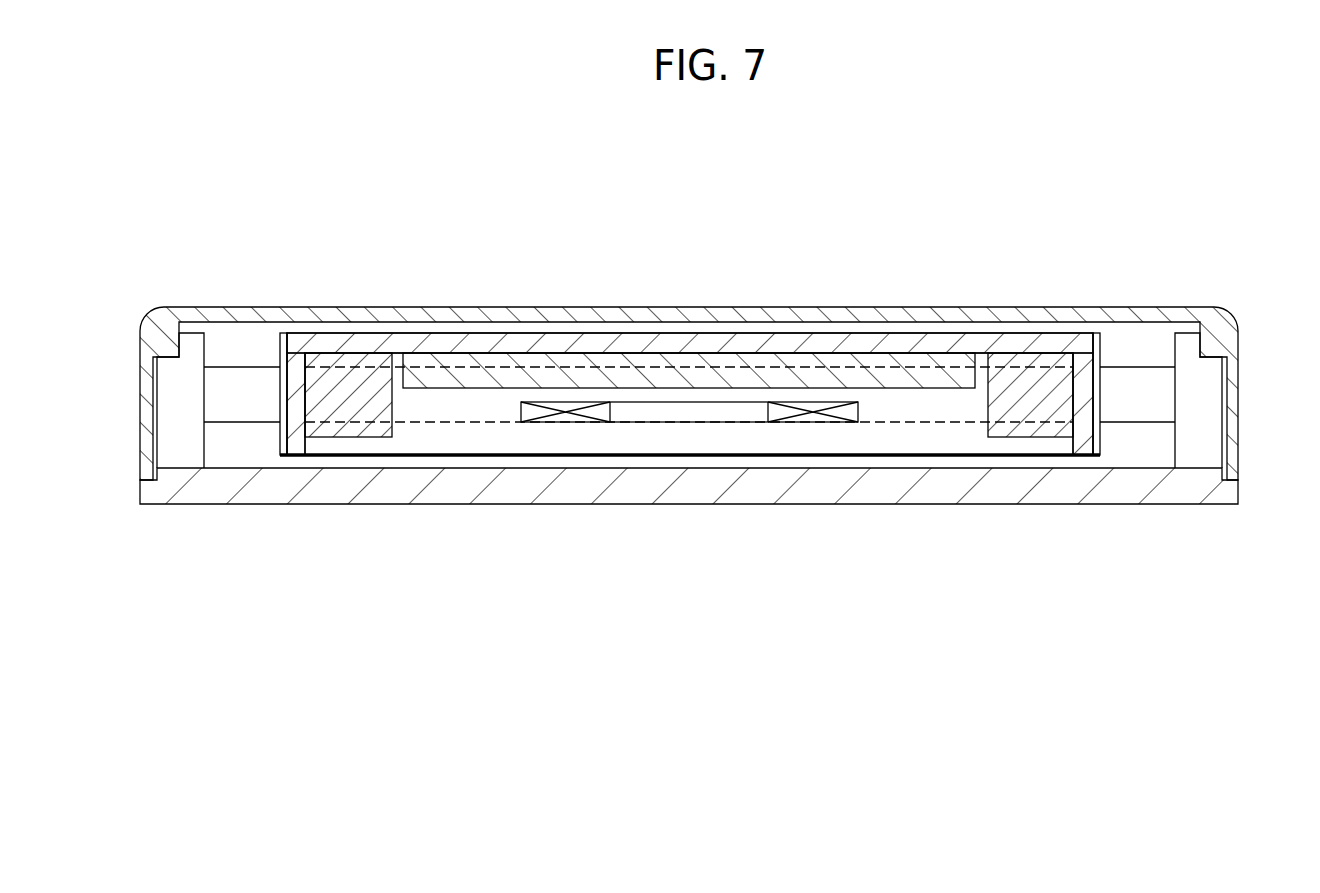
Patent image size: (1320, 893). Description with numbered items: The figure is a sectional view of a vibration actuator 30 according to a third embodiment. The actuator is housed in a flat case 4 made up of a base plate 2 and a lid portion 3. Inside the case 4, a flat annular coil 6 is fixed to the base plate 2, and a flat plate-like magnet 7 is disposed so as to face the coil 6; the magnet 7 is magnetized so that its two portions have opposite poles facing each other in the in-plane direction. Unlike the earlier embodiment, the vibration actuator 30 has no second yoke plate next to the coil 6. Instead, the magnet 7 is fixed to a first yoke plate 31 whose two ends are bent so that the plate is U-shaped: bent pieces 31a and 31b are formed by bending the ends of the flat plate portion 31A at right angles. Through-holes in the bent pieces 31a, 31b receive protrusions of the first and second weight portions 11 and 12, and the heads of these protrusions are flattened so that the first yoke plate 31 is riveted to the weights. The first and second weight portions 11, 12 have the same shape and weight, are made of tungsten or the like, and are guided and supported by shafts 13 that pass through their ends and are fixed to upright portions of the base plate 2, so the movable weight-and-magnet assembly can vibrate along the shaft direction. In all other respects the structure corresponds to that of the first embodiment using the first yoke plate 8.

The vibration actuator 30 is at (248, 145).
The base plate 2 is at (1225, 490).
The lid portion 3 is at (1238, 424).
The case 4 is at (1287, 410).
The coil 6 is at (818, 422).
The magnet 7 is at (693, 378).
The first yoke plate 8 is at (860, 343).
The first weight portion 11 is at (1035, 373).
The second weight portion 12 is at (345, 350).
The shaft 13 is at (1130, 378).
The first yoke plate 31 is at (917, 332).
The flat plate portion 31A is at (575, 345).
The bent piece 31a is at (1087, 390).
The bent piece 31b is at (293, 383).